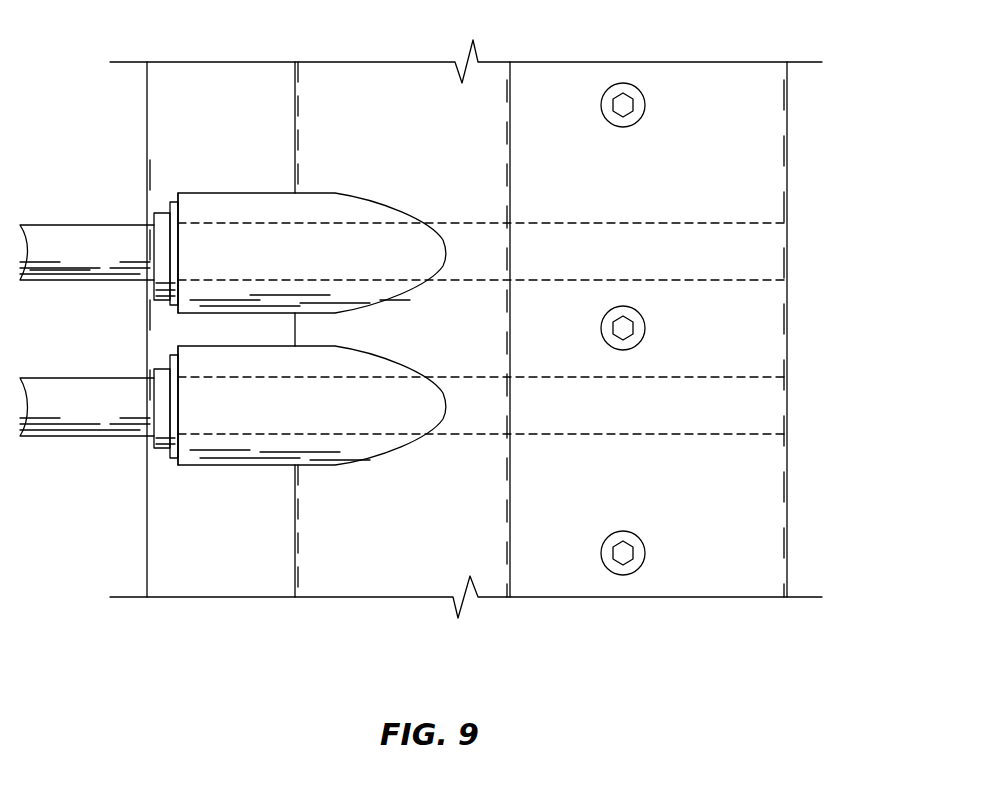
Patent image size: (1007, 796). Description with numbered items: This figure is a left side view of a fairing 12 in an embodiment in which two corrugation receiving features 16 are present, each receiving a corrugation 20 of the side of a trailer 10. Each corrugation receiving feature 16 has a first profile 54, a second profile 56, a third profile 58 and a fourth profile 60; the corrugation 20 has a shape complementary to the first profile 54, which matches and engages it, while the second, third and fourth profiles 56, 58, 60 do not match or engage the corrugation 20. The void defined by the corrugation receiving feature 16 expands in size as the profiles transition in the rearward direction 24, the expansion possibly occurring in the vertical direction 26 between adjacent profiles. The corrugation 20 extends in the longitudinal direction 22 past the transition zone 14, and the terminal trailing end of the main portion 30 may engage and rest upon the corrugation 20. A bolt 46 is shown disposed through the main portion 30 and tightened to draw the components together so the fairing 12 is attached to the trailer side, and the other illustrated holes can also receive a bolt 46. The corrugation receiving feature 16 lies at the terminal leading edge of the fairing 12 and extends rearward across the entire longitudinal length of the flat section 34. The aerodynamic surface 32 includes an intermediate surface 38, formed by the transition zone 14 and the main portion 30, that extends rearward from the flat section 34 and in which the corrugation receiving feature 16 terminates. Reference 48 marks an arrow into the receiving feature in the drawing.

The trailer 10 is at (147, 252).
The fairing 12 is at (742, 575).
The transition zone 14 is at (245, 578).
The corrugation receiving feature 16 is at (225, 445).
The corrugation 20 is at (70, 270).
The longitudinal direction 22 is at (388, 637).
The rearward direction 24 is at (675, 637).
The vertical direction 26 is at (816, 457).
The main portion 30 is at (375, 80).
The aerodynamic surface 32 is at (553, 568).
The flat section 34 is at (160, 108).
The intermediate surface 38 is at (358, 80).
The bolt 46 is at (625, 107).
The connector body 48 is at (243, 222).
The first profile 54 is at (156, 226).
The second profile 56 is at (162, 278).
The third profile 58 is at (175, 200).
The fourth profile 60 is at (205, 210).